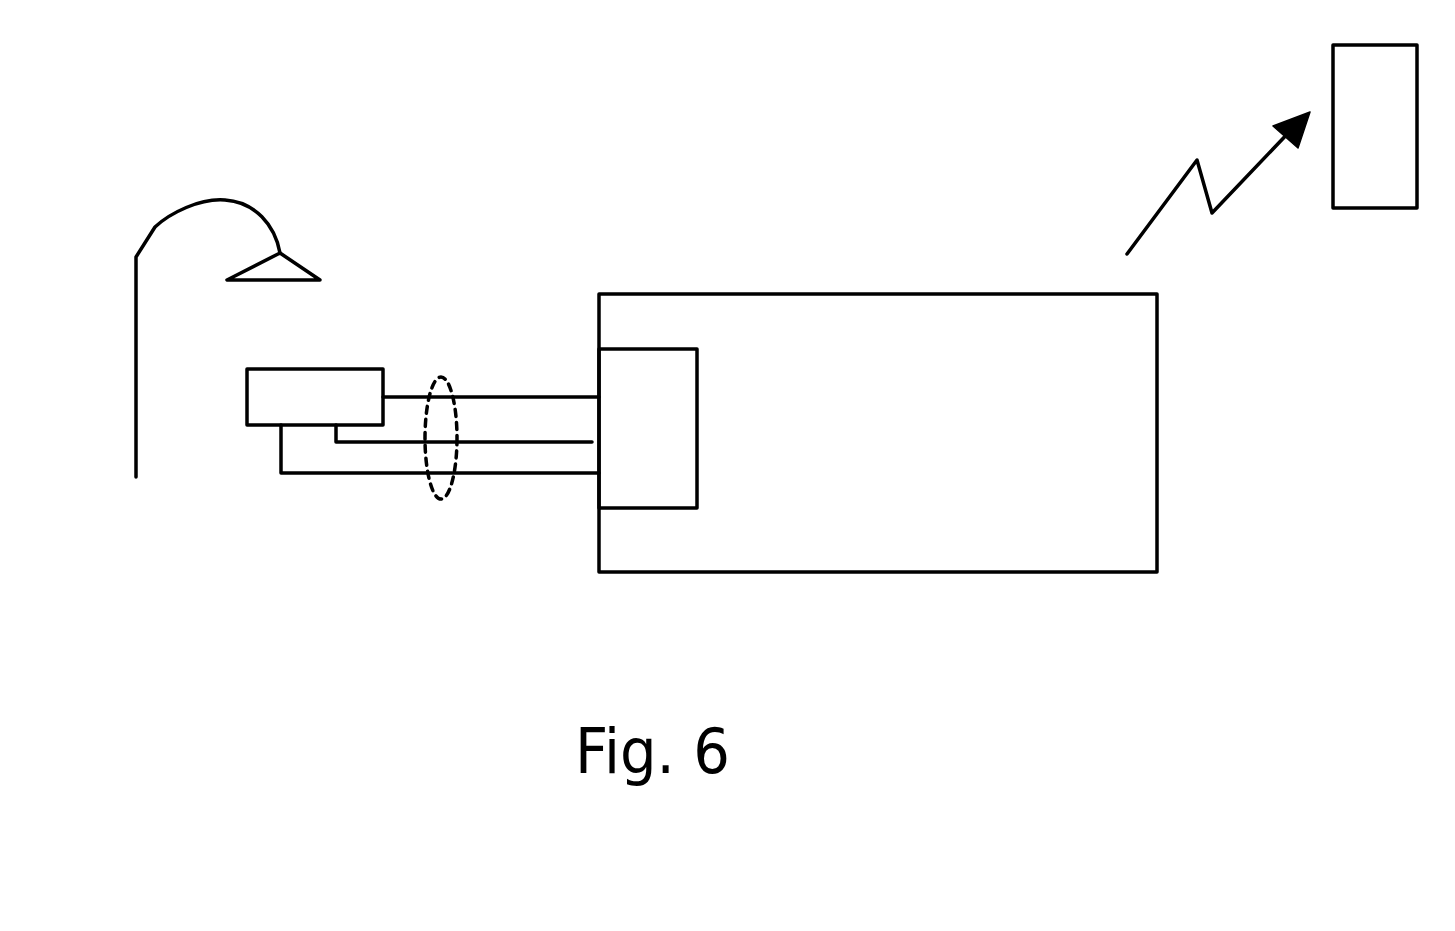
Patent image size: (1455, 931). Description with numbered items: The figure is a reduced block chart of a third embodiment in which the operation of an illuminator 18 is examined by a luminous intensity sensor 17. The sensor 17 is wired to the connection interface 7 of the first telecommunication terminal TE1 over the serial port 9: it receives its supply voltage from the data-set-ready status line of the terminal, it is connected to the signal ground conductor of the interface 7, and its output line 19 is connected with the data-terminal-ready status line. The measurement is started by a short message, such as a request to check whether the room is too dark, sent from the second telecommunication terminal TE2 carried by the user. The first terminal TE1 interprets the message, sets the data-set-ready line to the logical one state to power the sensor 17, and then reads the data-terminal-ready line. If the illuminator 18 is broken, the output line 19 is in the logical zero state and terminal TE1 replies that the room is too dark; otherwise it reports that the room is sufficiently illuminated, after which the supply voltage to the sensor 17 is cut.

The illuminator 18 is at (260, 208).
The luminous intensity sensor 17 is at (353, 365).
The output line of the luminous intensity sensor 19 is at (402, 395).
The serial port 9 is at (443, 499).
The connection interface 7 is at (655, 508).
The first telecommunication terminal TE1 is at (728, 287).
The second telecommunication terminal TE2 is at (1397, 208).